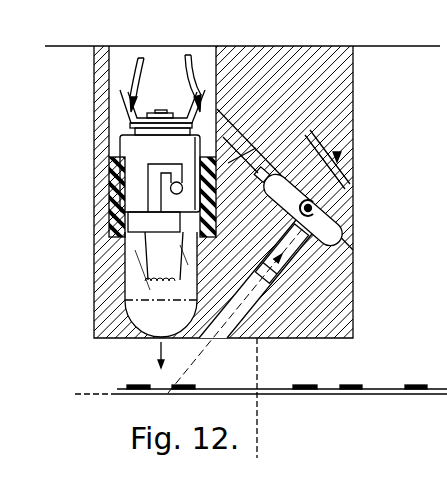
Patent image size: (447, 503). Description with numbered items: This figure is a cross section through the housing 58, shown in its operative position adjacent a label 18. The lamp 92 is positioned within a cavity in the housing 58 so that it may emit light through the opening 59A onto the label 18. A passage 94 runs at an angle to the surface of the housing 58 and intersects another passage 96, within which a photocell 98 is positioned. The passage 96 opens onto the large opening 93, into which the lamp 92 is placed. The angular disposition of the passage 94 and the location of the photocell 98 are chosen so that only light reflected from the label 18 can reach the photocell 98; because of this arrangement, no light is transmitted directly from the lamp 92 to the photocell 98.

The label 18 is at (265, 390).
The housing 58 is at (290, 52).
The opening 59A is at (152, 340).
The lamp 92 is at (127, 280).
The large opening 93 is at (200, 53).
The passage 94 is at (217, 326).
The passage 96 is at (253, 150).
The photocell 98 is at (335, 224).